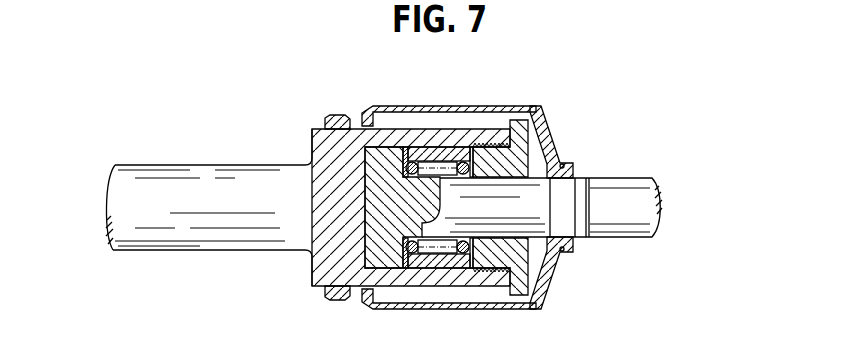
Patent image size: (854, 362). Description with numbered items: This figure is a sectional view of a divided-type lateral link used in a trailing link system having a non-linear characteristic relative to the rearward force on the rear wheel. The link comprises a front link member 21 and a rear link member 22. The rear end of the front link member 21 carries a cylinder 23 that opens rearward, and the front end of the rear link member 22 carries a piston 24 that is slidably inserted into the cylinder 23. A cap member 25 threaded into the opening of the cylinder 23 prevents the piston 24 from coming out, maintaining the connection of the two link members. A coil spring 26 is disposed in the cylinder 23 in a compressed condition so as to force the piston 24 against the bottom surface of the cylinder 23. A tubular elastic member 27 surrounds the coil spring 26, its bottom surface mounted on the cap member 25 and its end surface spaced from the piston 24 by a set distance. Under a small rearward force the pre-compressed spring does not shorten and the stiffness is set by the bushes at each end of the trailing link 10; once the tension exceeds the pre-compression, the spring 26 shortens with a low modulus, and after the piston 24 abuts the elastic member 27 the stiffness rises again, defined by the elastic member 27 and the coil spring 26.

The trailing link 10 is at (240, 129).
The front link member 21 is at (185, 168).
The rear link member 22 is at (623, 187).
The cylinder 23 is at (470, 130).
The piston 24 is at (386, 150).
The cap member 25 is at (518, 138).
The coil spring 26 is at (413, 243).
The tubular elastic member 27 is at (450, 262).